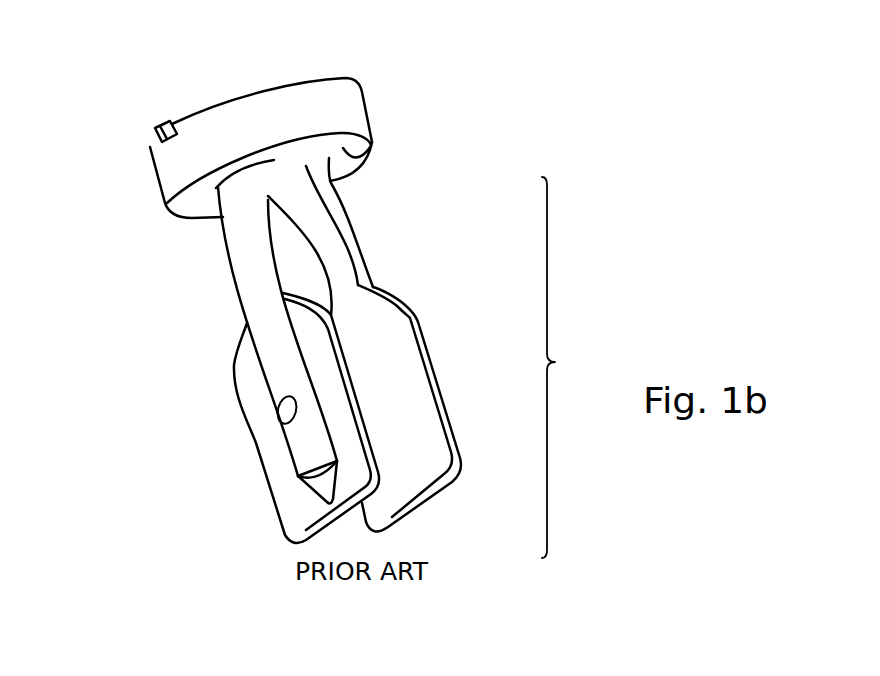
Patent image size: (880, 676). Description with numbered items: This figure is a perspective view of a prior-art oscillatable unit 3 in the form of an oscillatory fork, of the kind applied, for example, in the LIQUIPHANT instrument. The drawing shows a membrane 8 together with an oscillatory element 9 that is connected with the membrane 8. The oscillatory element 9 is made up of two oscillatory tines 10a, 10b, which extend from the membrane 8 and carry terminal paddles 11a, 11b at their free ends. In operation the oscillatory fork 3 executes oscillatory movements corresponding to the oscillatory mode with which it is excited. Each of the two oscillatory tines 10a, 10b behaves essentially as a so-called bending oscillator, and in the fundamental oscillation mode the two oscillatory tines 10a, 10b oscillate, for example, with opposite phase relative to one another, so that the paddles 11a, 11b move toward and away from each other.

The oscillatable unit 3 is at (126, 83).
The membrane 8 is at (369, 155).
The oscillatory element 9 is at (564, 367).
The oscillatory tine 10a is at (247, 270).
The oscillatory tine 10b is at (350, 231).
The paddle 11a is at (254, 387).
The paddle 11b is at (390, 372).